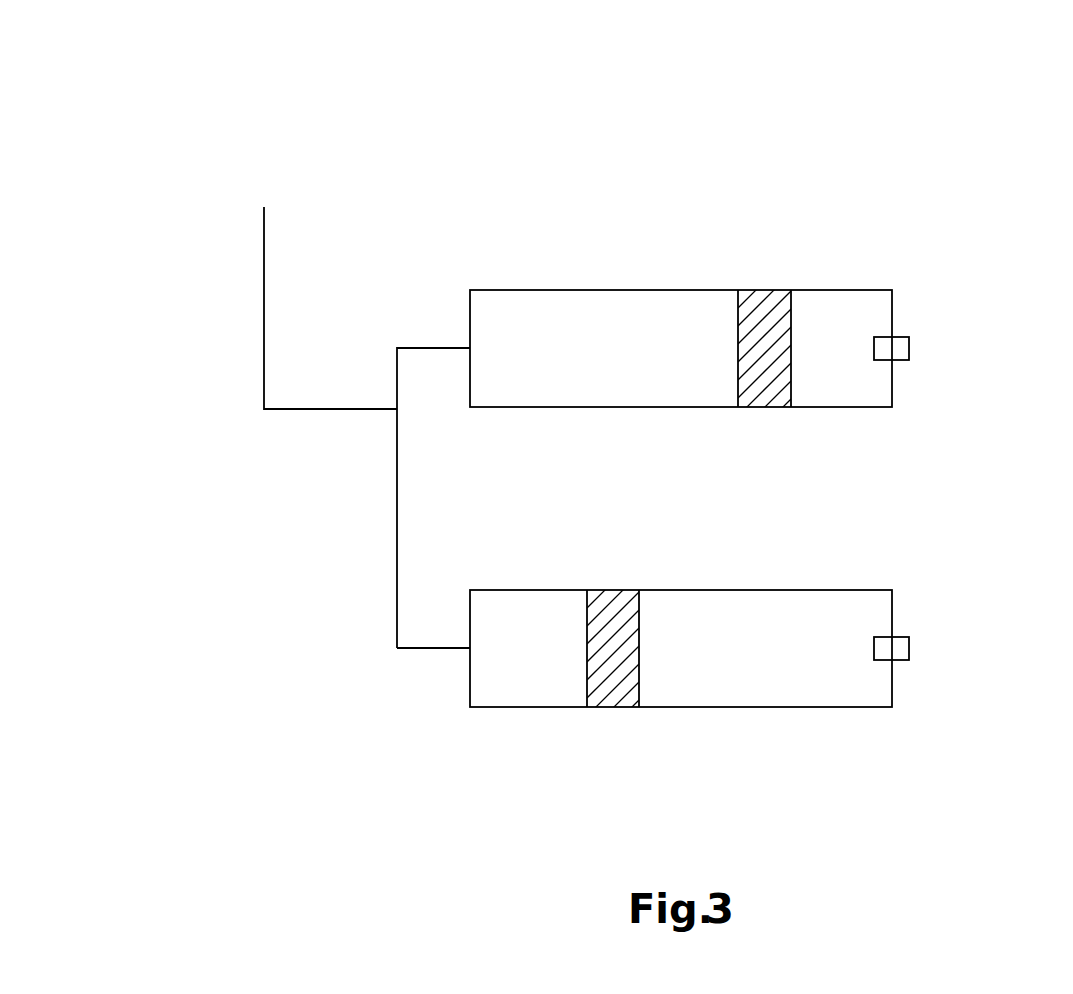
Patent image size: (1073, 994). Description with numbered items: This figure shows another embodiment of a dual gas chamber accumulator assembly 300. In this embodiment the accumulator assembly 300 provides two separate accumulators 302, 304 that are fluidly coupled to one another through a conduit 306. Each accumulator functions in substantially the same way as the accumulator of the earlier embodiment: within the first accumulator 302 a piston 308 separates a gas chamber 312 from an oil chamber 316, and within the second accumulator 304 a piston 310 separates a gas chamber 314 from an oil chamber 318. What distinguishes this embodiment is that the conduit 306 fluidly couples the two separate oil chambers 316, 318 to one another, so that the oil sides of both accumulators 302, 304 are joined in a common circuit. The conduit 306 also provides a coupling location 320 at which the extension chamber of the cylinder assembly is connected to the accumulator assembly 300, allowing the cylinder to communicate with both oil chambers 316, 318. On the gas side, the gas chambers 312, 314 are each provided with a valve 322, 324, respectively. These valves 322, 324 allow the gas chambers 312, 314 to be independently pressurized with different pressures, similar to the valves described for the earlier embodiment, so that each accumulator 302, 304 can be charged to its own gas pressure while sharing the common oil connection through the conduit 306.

The accumulator assembly 300 is at (975, 128).
The accumulator 302 is at (652, 290).
The accumulator 304 is at (727, 707).
The conduit 306 is at (397, 618).
The piston 308 is at (763, 305).
The piston 310 is at (617, 690).
The gas chamber 312 is at (838, 305).
The gas chamber 314 is at (815, 688).
The oil chamber 316 is at (530, 318).
The oil chamber 318 is at (512, 673).
The coupling location 320 is at (264, 283).
The valve 322 is at (909, 346).
The valve 324 is at (909, 646).